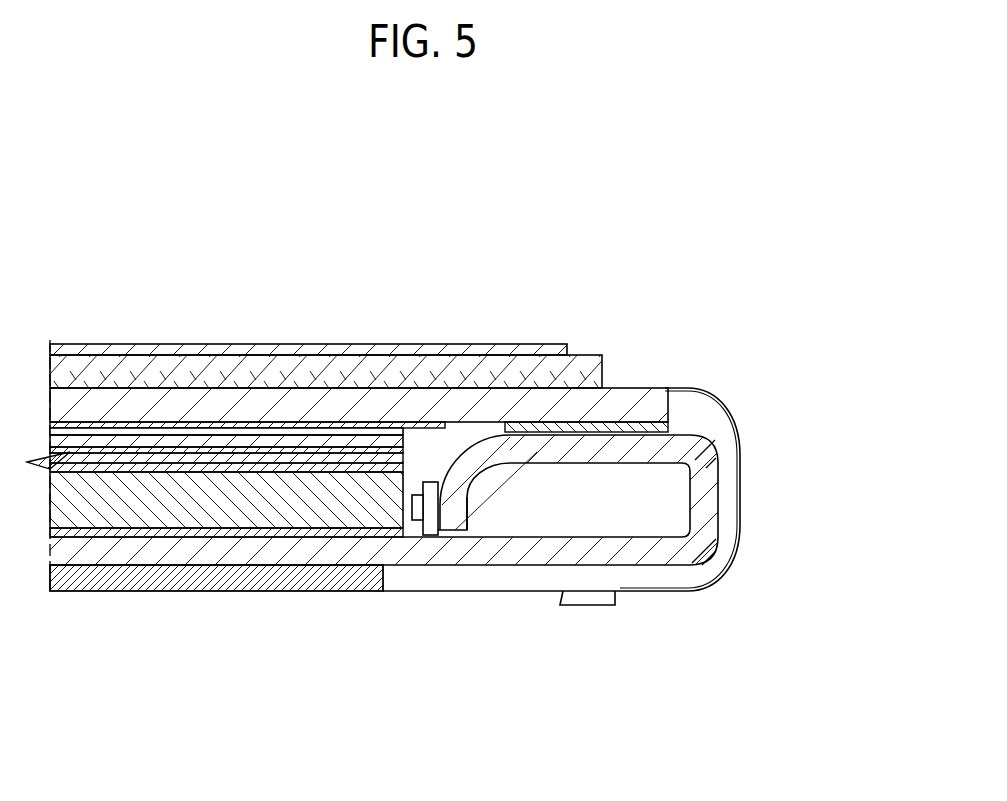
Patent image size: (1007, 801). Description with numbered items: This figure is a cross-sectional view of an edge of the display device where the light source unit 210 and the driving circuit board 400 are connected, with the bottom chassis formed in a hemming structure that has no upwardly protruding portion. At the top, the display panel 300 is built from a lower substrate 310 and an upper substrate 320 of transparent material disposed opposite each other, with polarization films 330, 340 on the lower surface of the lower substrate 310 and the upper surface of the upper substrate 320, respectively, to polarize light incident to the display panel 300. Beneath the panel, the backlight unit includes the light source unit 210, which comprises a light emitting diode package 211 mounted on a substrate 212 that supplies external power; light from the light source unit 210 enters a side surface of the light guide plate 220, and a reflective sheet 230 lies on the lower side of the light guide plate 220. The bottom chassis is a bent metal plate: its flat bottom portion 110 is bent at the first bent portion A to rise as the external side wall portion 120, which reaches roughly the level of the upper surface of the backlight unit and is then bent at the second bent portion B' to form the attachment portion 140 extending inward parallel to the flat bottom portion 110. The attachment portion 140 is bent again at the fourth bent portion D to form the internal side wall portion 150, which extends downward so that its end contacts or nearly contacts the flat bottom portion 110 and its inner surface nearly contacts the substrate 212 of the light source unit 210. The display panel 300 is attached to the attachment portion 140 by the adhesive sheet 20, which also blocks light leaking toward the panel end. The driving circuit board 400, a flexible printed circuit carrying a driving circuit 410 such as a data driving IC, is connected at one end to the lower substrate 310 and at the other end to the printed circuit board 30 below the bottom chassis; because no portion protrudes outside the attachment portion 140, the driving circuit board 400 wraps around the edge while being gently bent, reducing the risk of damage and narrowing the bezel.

The display panel 300 is at (359, 323).
The lower substrate 310 is at (190, 406).
The upper substrate 320 is at (279, 372).
The polarization film 330 is at (178, 266).
The polarization film 340 is at (475, 347).
The adhesive sheet 20 is at (637, 430).
The driving circuit board 400 is at (717, 407).
The second bent portion B' is at (749, 448).
The external side wall portion 120 is at (705, 515).
The first bent portion A is at (703, 547).
The flat bottom portion 110 is at (642, 548).
The attachment portion 140 is at (537, 452).
The internal side wall portion 150 is at (457, 503).
The fourth bent portion D is at (473, 457).
The light source unit 210 is at (391, 613).
The light emitting diode package 211 is at (417, 518).
The substrate 212 is at (432, 518).
The light guide plate 220 is at (122, 508).
The reflective sheet 230 is at (203, 535).
The printed circuit board 30 is at (279, 578).
The driving circuit 410 is at (582, 608).